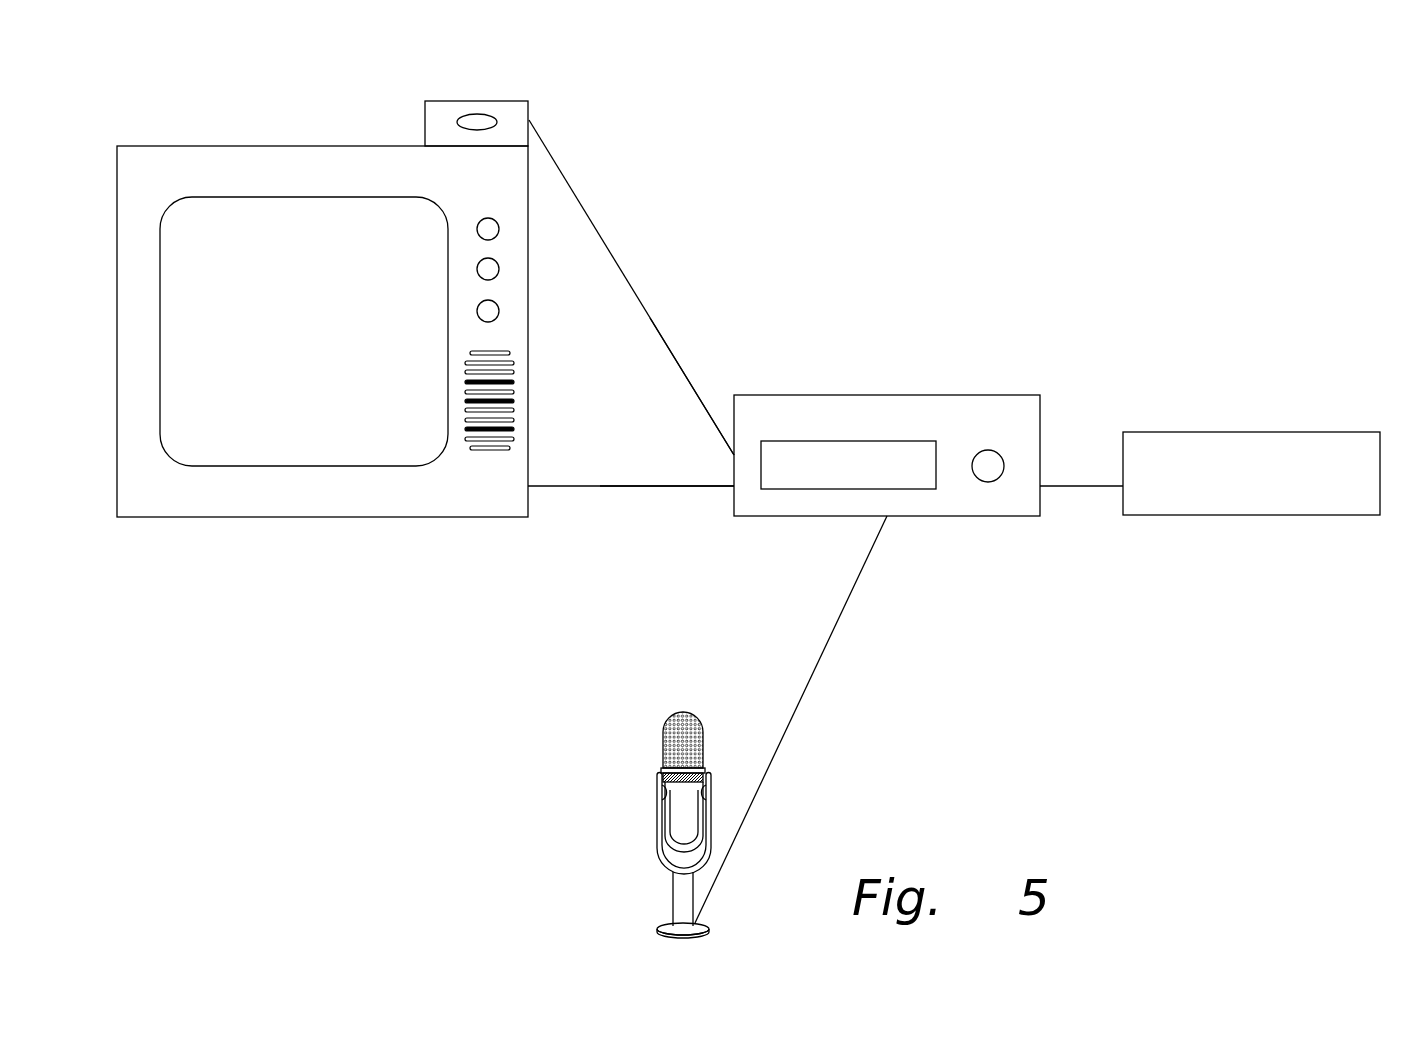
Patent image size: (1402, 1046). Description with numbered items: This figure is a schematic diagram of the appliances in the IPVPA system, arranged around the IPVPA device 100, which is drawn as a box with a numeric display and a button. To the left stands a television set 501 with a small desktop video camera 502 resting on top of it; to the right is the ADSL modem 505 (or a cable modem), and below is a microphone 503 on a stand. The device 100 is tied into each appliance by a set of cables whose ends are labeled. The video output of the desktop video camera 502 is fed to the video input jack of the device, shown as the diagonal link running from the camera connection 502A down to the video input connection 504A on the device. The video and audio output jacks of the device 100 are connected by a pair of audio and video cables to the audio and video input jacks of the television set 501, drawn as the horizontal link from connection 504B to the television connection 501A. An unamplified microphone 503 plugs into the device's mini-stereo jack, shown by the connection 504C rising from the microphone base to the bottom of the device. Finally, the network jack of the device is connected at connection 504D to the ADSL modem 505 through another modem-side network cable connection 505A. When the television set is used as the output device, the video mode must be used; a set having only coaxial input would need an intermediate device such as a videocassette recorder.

The IPVPA device 100 is at (980, 395).
The television set 501 is at (247, 146).
The television connection 501A is at (543, 500).
The desktop video camera 502 is at (440, 101).
The camera connection 502A is at (552, 135).
The microphone 503 is at (660, 752).
The video input connection 504A is at (721, 404).
The audio and video output connection 504B is at (715, 505).
The microphone connection 504C is at (892, 541).
The RJ-45 connection 504D is at (1047, 510).
The ADSL modem 505 is at (1257, 432).
The RJ-45 modem connection 505A is at (1113, 505).